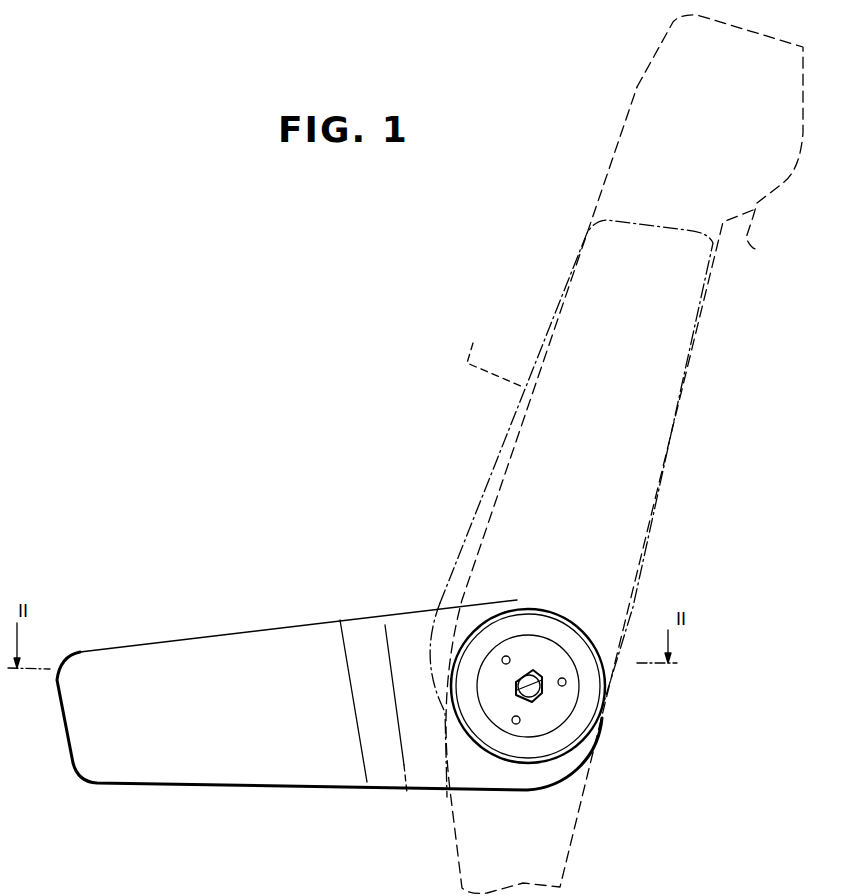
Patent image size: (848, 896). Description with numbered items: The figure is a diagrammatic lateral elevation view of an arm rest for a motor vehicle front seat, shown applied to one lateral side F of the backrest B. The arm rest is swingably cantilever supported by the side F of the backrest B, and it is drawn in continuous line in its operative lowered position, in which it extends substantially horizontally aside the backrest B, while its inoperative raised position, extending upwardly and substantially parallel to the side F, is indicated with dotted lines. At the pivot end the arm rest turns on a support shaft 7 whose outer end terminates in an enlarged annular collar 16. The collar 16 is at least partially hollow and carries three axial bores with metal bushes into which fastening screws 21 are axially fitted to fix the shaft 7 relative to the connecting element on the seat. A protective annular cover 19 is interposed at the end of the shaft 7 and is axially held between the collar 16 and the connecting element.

The support shaft 7 is at (542, 697).
The enlarged annular collar 16 is at (493, 707).
The protective annular cover 19 is at (556, 628).
The fastening screws 21 is at (508, 656).
The lateral side of the backrest F is at (633, 100).
The backrest B is at (601, 508).